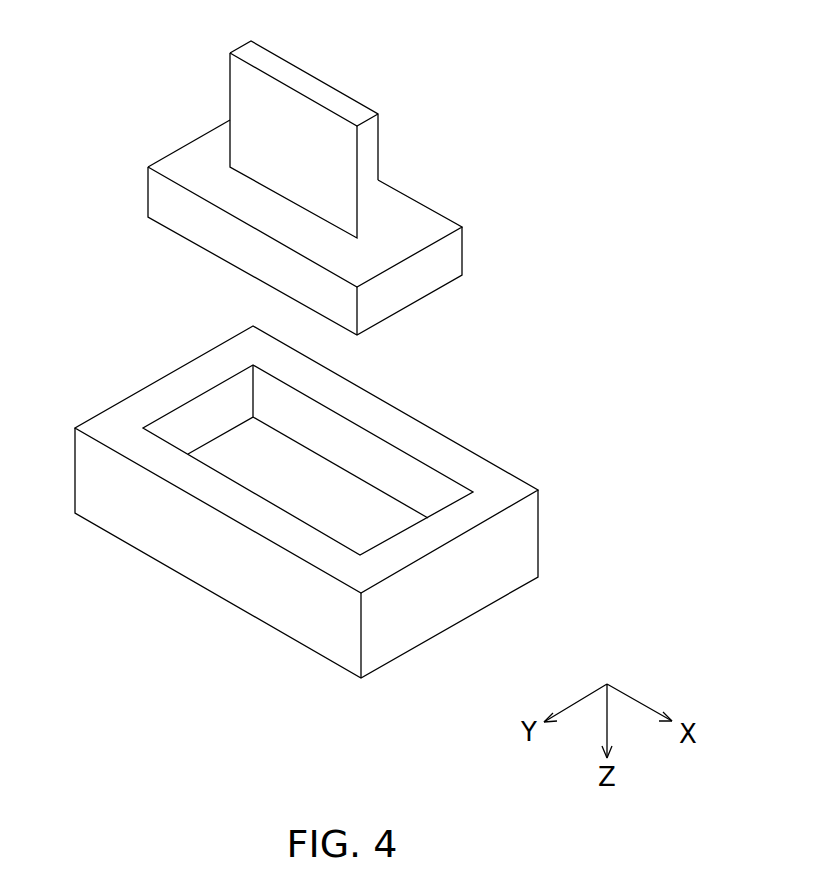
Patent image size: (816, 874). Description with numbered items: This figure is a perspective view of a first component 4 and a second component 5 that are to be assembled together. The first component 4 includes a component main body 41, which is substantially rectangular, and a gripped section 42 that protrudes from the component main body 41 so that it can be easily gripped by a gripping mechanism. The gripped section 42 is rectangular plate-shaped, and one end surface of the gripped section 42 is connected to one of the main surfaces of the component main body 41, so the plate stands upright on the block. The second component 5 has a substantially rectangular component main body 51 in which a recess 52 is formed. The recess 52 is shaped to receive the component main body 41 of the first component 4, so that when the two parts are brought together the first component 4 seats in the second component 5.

The first component 4 is at (334, 174).
The component main body 41 is at (422, 280).
The gripped section 42 is at (332, 82).
The second component 5 is at (326, 517).
The component main body 51 is at (424, 618).
The recess 52 is at (390, 463).